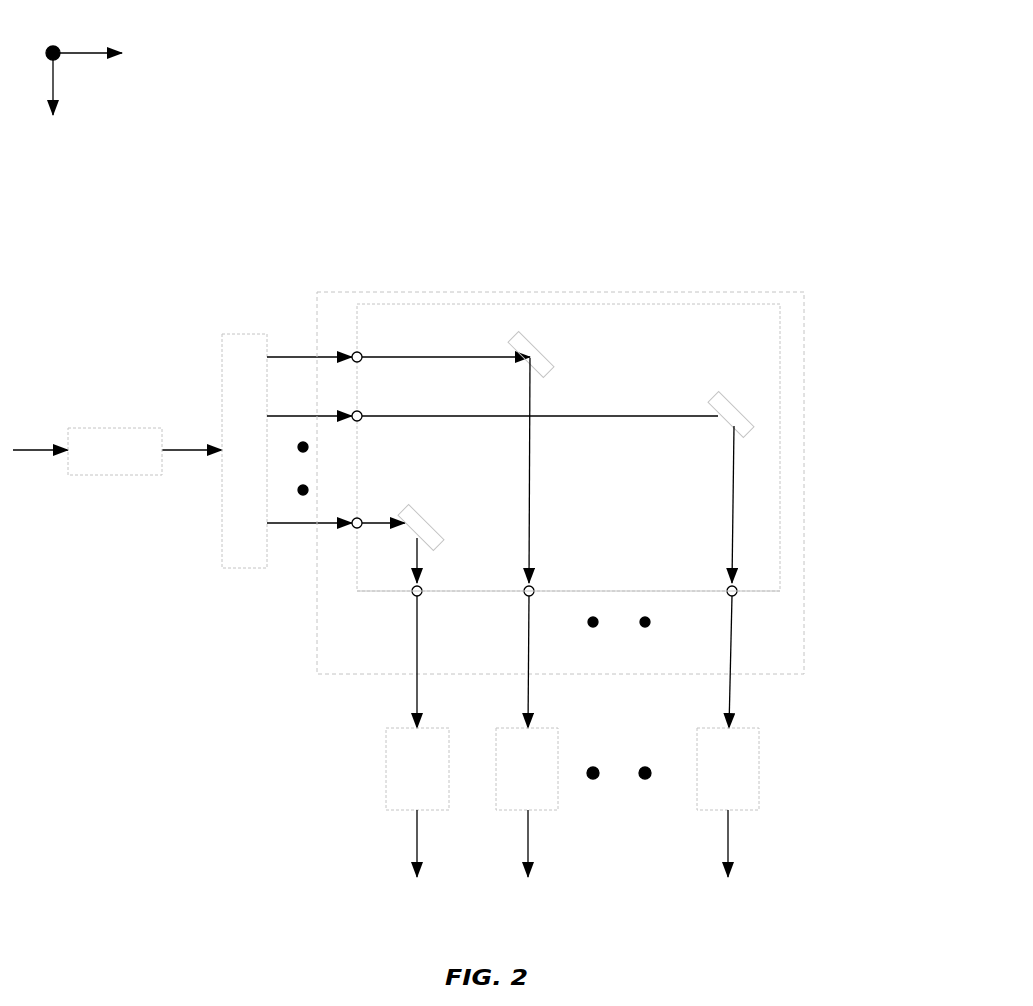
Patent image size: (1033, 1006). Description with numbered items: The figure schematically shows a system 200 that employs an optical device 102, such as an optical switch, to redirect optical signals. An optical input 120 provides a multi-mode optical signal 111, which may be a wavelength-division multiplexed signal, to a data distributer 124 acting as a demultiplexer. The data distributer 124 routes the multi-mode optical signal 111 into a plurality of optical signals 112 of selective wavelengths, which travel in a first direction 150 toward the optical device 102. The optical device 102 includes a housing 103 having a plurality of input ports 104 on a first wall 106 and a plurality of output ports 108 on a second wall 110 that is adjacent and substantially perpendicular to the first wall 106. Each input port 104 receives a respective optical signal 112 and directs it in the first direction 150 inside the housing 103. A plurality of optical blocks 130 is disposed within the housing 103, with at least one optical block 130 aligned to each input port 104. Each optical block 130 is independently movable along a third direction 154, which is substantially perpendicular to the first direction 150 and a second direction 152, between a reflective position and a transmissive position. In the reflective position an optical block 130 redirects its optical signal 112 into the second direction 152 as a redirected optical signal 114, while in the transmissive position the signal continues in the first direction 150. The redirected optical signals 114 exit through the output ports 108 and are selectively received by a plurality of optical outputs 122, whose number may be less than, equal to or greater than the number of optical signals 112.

The system 200 is at (532, 138).
The third direction 154 is at (50, 46).
The first direction 150 is at (100, 40).
The second direction 152 is at (74, 86).
The multi-mode optical signal 111 is at (30, 447).
The optical input 120 is at (118, 466).
The data distributer 124 is at (222, 540).
The optical signals 112 is at (290, 590).
The optical device 102 is at (448, 292).
The housing 103 is at (630, 304).
The input ports 104 is at (360, 353).
The optical blocks 130 is at (735, 420).
The redirected optical signals 114 is at (533, 483).
The first wall 106 is at (357, 575).
The output ports 108 is at (422, 594).
The second wall 110 is at (763, 590).
The optical outputs 122 is at (437, 783).